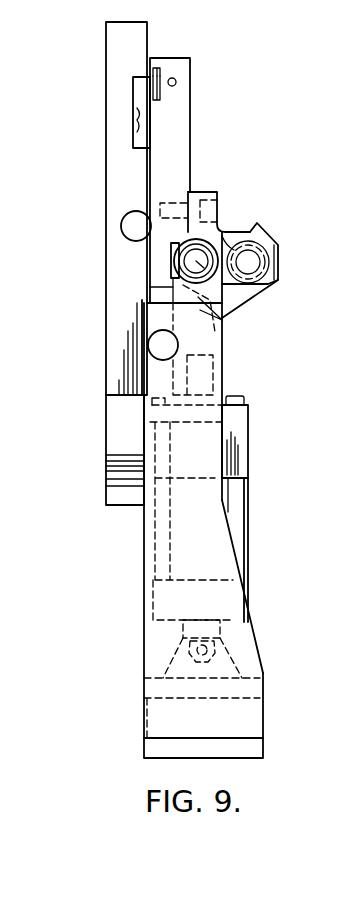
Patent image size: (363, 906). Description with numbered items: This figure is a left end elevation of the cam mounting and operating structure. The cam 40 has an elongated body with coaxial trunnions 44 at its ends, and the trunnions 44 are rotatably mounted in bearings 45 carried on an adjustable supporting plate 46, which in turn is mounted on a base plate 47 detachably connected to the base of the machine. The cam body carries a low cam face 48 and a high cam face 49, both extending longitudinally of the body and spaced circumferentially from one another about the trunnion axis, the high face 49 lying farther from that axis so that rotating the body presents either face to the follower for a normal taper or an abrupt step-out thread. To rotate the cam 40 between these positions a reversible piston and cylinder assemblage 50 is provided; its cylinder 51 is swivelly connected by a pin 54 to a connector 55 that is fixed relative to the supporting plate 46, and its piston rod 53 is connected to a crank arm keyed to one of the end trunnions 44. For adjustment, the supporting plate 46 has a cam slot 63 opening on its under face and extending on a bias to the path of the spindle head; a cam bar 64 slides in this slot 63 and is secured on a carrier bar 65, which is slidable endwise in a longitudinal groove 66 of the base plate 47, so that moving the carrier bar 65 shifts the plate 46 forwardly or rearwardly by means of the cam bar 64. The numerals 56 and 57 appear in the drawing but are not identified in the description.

The cam 40 is at (282, 262).
The trunnions 44 is at (248, 262).
The bearings 45 is at (205, 192).
The adjustable supporting plate 46 is at (190, 78).
The base plate 47 is at (106, 50).
The low cam face 48 is at (258, 300).
The high cam face 49 is at (225, 338).
The piston and cylinder assemblage 50 is at (248, 467).
The cylinder 51 is at (228, 508).
The piston rod 53 is at (173, 290).
The pin 54 is at (185, 646).
The connector 55 is at (263, 750).
The housing body 56 is at (257, 648).
The pin 57 is at (226, 240).
The cam slot 63 is at (160, 98).
The cam bar 64 is at (160, 73).
The carrier bar 65 is at (140, 127).
The longitudinal groove 66 is at (137, 112).